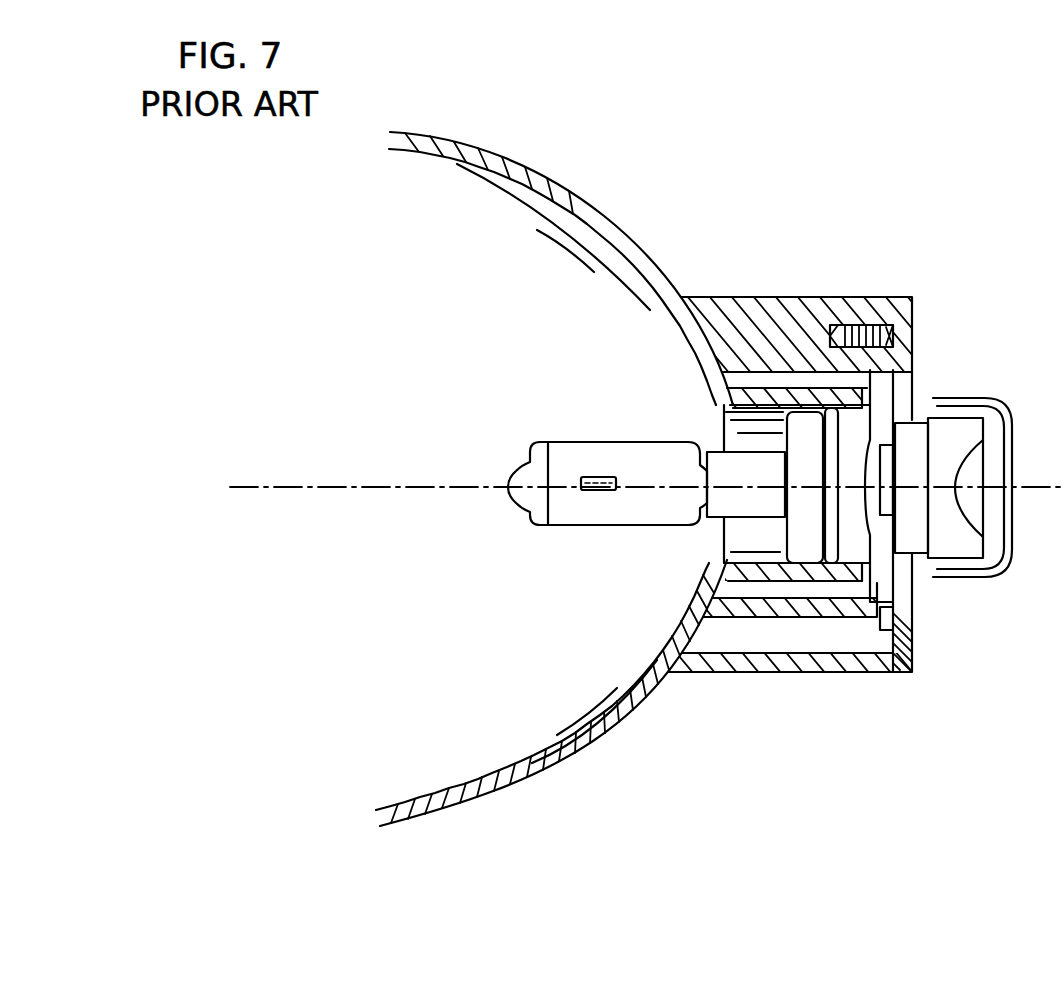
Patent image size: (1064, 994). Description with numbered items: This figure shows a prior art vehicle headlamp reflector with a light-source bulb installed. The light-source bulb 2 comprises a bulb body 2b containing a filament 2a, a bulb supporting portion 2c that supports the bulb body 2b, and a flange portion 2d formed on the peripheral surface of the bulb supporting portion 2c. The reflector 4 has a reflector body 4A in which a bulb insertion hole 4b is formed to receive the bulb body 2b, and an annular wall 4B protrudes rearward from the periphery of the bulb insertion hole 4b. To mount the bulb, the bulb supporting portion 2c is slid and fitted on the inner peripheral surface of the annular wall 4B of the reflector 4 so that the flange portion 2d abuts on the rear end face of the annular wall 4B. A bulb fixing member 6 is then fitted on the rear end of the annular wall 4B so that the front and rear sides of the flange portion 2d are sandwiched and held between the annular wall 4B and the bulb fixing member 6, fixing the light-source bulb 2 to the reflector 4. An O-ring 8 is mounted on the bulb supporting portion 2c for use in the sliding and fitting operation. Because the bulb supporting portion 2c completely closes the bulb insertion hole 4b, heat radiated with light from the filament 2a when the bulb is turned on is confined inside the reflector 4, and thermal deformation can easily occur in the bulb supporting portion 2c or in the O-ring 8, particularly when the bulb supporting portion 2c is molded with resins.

The light-source bulb 2 is at (639, 476).
The filament 2a is at (590, 491).
The bulb body 2b is at (640, 527).
The bulb supporting portion 2c is at (800, 527).
The flange portion 2d is at (882, 415).
The reflector 4 is at (614, 222).
The reflector body 4A is at (590, 758).
The annular wall 4B is at (774, 678).
The bulb insertion hole 4b is at (735, 442).
The bulb fixing member 6 is at (915, 641).
The O-ring 8 is at (830, 540).